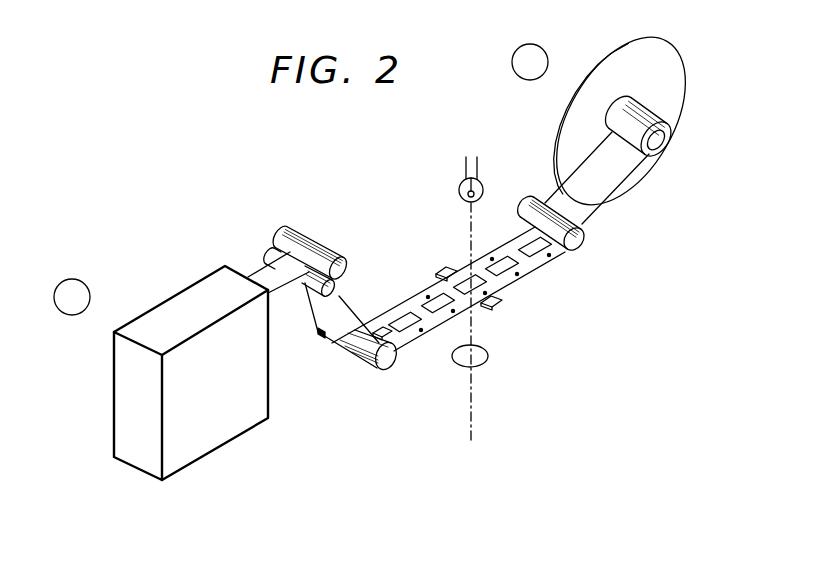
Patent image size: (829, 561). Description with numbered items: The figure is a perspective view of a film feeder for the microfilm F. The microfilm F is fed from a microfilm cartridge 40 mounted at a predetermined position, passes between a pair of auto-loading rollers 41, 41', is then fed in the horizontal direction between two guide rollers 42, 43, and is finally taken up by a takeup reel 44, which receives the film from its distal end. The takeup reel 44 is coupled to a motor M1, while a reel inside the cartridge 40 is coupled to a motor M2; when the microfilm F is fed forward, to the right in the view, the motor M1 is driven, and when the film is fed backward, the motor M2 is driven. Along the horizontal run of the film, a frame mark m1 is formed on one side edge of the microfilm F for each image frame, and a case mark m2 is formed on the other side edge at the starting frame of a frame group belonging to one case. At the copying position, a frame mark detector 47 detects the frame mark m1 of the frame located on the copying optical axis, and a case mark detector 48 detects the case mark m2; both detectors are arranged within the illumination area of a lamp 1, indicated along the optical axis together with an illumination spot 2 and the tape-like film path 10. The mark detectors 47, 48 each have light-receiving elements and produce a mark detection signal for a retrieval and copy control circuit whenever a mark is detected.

The lamp 1 is at (458, 190).
The detection spot / light source 2 is at (489, 357).
The carrier tape 10 is at (504, 279).
The microfilm cartridge 40 is at (189, 287).
The auto-loading roller 41 is at (311, 242).
The auto-loading roller 41' is at (331, 273).
The guide roller 42 is at (394, 358).
The guide roller 43 is at (586, 238).
The takeup reel 44 is at (573, 124).
The frame mark detector 47 is at (499, 308).
The case mark detector 48 is at (440, 270).
The microfilm F is at (611, 182).
The motor M1 is at (580, 100).
The motor M2 is at (118, 326).
The frame mark m1 is at (549, 257).
The case mark m2 is at (493, 258).